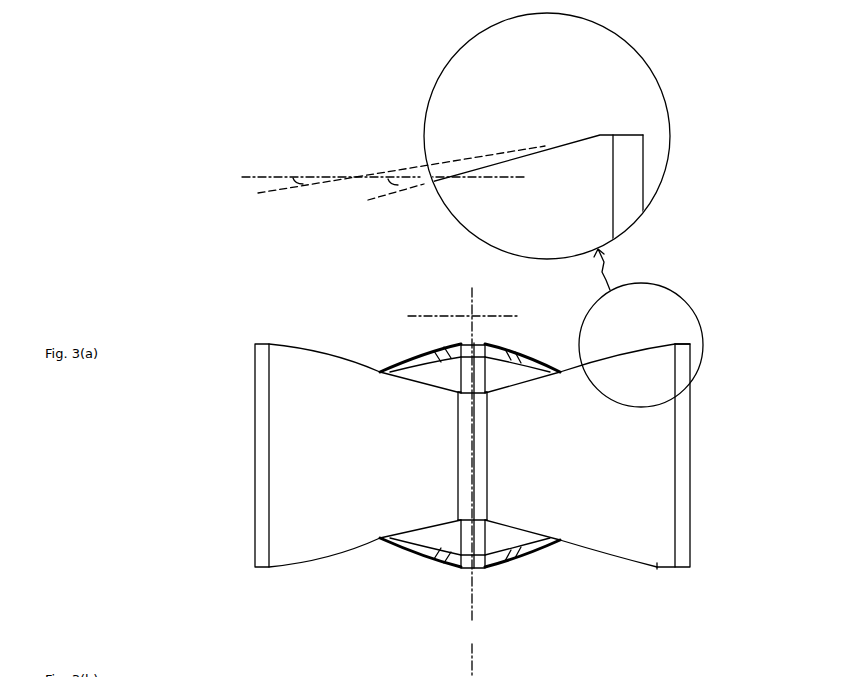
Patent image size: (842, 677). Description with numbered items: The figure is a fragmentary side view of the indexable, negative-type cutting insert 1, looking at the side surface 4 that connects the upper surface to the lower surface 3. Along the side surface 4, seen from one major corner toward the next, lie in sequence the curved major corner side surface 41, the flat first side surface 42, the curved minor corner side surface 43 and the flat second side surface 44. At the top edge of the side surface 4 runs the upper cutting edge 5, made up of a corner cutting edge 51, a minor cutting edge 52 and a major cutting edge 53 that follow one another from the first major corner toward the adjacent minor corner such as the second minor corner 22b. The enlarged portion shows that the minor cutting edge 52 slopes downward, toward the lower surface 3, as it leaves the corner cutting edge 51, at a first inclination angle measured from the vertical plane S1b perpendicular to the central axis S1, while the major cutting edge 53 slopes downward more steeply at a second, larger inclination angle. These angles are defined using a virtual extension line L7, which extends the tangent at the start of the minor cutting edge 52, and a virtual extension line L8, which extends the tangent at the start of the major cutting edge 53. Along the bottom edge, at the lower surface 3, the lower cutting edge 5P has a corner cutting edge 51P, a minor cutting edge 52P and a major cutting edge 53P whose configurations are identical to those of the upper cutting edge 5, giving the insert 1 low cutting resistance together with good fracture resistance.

The insert 1 is at (740, 338).
The lower surface 3 is at (435, 530).
The side surface 4 is at (475, 367).
The major corner side surface 41 is at (627, 180).
The first side surface 42 is at (570, 212).
The minor corner side surface 43 is at (458, 445).
The second side surface 44 is at (363, 493).
The upper cutting edge 5 is at (643, 70).
The corner cutting edge 51 is at (627, 135).
The minor cutting edge 52 is at (562, 146).
The major cutting edge 53 is at (487, 160).
The lower cutting edge 5P is at (728, 602).
The corner cutting edge 51P is at (682, 571).
The minor cutting edge 52P is at (657, 570).
The major cutting edge 53P is at (609, 555).
The second minor corner 22b is at (475, 382).
The central axis S1 is at (470, 474).
The vertical plane S1b is at (270, 172).
The virtual extension line L7 is at (275, 192).
The virtual extension line L8 is at (380, 200).